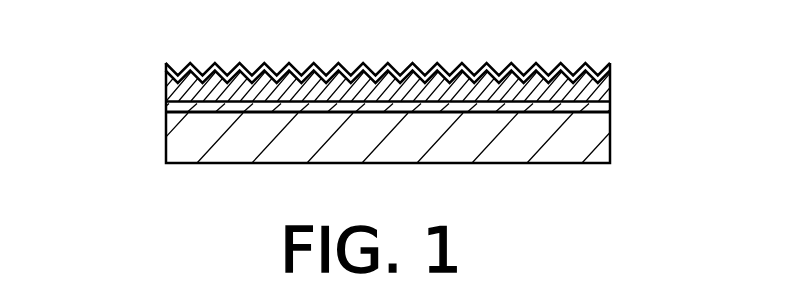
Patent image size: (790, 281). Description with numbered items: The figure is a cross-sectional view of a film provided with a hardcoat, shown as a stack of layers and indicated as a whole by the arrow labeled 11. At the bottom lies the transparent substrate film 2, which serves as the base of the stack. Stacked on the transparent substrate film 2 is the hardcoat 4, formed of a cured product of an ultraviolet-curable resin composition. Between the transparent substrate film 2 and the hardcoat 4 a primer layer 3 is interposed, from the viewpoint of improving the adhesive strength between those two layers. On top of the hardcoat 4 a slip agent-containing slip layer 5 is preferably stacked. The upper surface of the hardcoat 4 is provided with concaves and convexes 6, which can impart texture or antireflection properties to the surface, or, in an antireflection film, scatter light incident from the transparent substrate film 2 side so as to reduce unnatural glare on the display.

The laminated reflector / optical sheet 11 is at (146, 78).
The transparent substrate film 2 is at (578, 147).
The primer layer 3 is at (608, 106).
The hardcoat 4 is at (606, 90).
The slip layer 5 is at (615, 70).
The concaves and convexes 6 is at (575, 57).